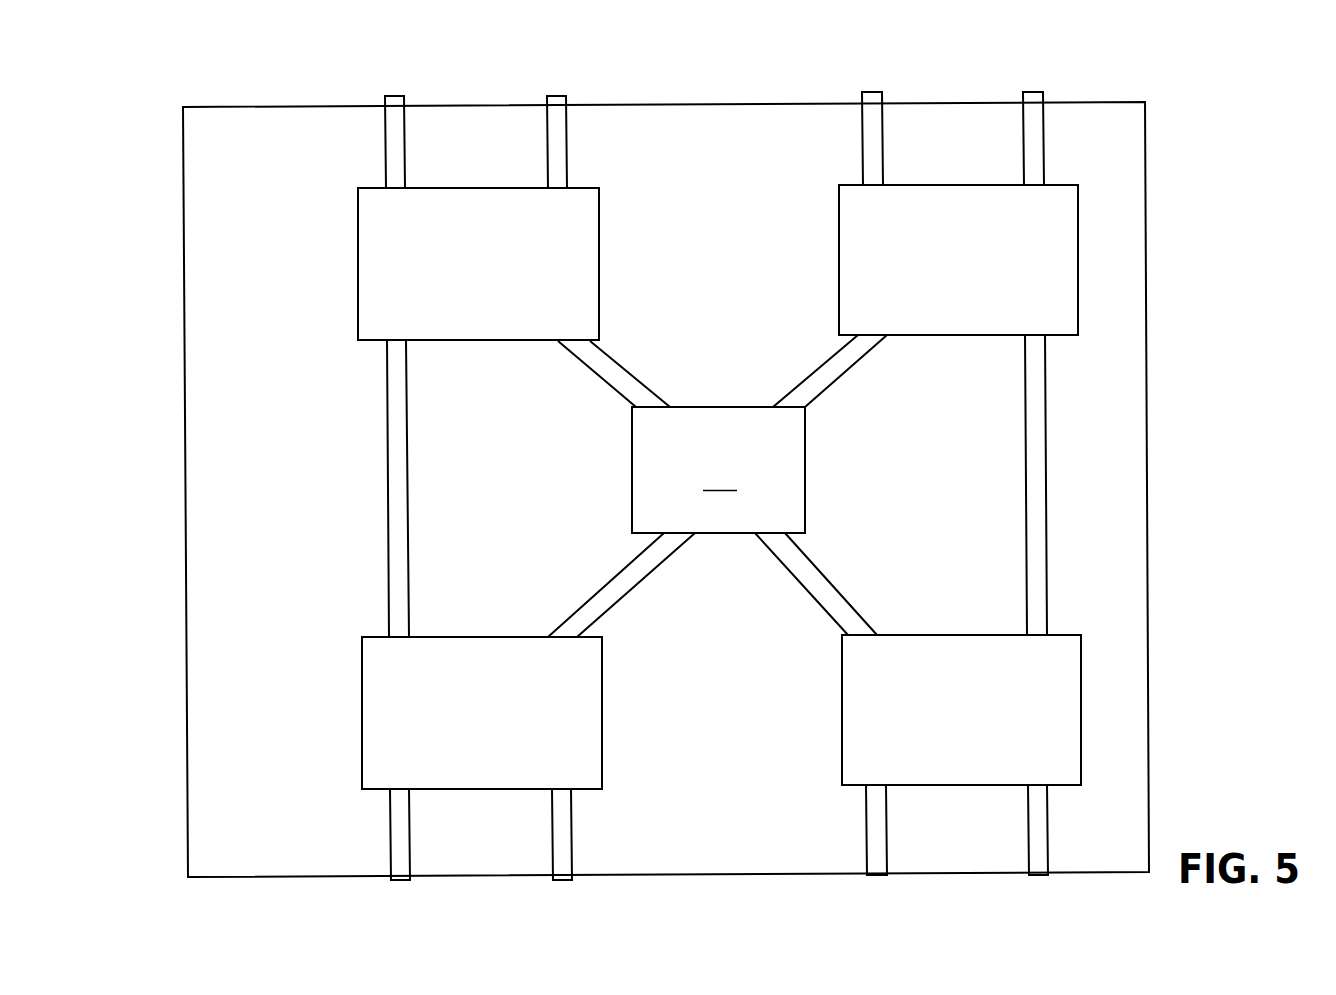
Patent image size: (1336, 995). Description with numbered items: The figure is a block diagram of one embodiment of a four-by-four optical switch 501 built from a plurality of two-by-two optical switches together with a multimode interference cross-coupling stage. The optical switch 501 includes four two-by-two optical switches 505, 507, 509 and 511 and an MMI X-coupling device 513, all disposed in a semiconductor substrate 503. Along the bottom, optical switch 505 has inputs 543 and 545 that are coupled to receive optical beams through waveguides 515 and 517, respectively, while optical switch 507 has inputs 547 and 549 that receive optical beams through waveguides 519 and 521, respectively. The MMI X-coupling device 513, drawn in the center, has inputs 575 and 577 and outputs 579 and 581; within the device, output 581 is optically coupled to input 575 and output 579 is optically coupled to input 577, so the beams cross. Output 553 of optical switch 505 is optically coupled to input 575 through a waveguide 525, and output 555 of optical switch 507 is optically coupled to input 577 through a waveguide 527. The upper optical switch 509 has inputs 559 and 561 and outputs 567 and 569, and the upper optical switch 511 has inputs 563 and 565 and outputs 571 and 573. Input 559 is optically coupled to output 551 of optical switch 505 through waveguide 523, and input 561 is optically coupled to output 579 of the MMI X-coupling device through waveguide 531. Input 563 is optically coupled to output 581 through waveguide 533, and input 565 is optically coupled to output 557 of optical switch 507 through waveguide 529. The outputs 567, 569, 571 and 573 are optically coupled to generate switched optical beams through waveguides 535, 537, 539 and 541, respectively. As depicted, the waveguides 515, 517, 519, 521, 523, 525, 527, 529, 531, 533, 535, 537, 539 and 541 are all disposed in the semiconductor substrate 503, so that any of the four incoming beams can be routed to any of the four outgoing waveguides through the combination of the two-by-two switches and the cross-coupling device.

The 4×4 optical switch 501 is at (922, 81).
The semiconductor substrate 503 is at (250, 105).
The 2×2 optical switch 505 is at (362, 702).
The 2×2 optical switch 507 is at (842, 700).
The 2×2 optical switch 509 is at (358, 273).
The 2×2 optical switch 511 is at (839, 273).
The MMI X-coupling device 513 is at (632, 485).
The waveguide 515 is at (365, 834).
The waveguide 517 is at (599, 834).
The waveguide 519 is at (842, 831).
The waveguide 521 is at (1075, 831).
The waveguide 523 is at (370, 488).
The waveguide 525 is at (596, 589).
The waveguide 527 is at (840, 573).
The waveguide 529 is at (1059, 485).
The waveguide 531 is at (615, 384).
The waveguide 533 is at (833, 382).
The waveguide 535 is at (355, 142).
The waveguide 537 is at (517, 142).
The waveguide 539 is at (832, 139).
The waveguide 541 is at (993, 139).
The input 543 is at (390, 793).
The input 545 is at (571, 793).
The input 547 is at (867, 793).
The input 549 is at (1048, 793).
The output 551 is at (388, 637).
The output 553 is at (548, 636).
The output 555 is at (878, 626).
The output 557 is at (1046, 625).
The input 559 is at (370, 488).
The input 561 is at (615, 374).
The input 563 is at (833, 371).
The input 565 is at (1059, 485).
The output 567 is at (384, 187).
The output 569 is at (547, 187).
The output 571 is at (862, 187).
The output 573 is at (1023, 187).
The input 575 is at (596, 585).
The input 577 is at (840, 566).
The output 579 is at (675, 405).
The output 581 is at (773, 405).